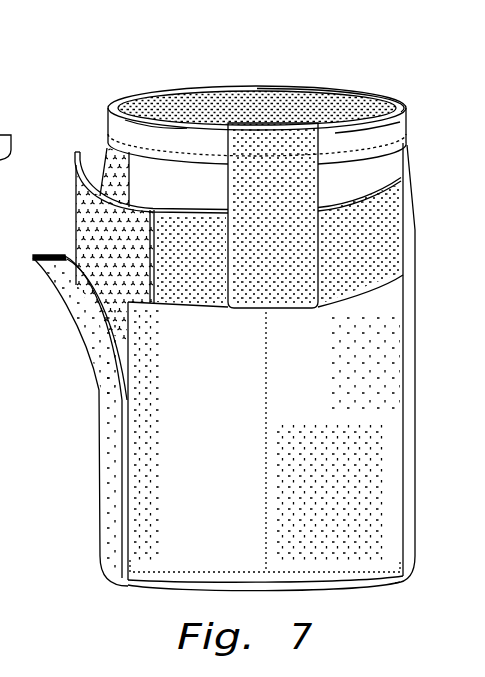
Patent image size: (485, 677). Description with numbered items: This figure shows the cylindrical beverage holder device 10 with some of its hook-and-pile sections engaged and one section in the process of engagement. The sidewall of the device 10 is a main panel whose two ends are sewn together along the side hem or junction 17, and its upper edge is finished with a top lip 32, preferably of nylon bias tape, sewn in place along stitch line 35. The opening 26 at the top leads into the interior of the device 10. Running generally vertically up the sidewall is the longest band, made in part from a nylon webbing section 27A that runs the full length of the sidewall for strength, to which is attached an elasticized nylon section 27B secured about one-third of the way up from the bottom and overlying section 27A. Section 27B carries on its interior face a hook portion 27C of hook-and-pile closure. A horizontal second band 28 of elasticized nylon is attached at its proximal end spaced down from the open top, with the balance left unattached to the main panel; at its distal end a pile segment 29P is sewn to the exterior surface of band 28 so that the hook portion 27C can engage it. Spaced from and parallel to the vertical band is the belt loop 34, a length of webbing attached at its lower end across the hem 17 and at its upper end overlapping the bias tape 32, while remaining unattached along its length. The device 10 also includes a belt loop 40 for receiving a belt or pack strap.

The device 10 is at (254, 50).
The hem or junction 17 is at (262, 423).
The opening 26 is at (224, 96).
The nylon webbing section 27A is at (406, 398).
The elasticized nylon section 27B is at (64, 360).
The hook portion 27C is at (55, 246).
The second band 28 is at (338, 338).
The pile segment 29P is at (138, 262).
The top lip 32 is at (365, 93).
The belt loop 34 is at (300, 237).
The stitch line 35 is at (108, 135).
The belt loop 40 is at (237, 197).